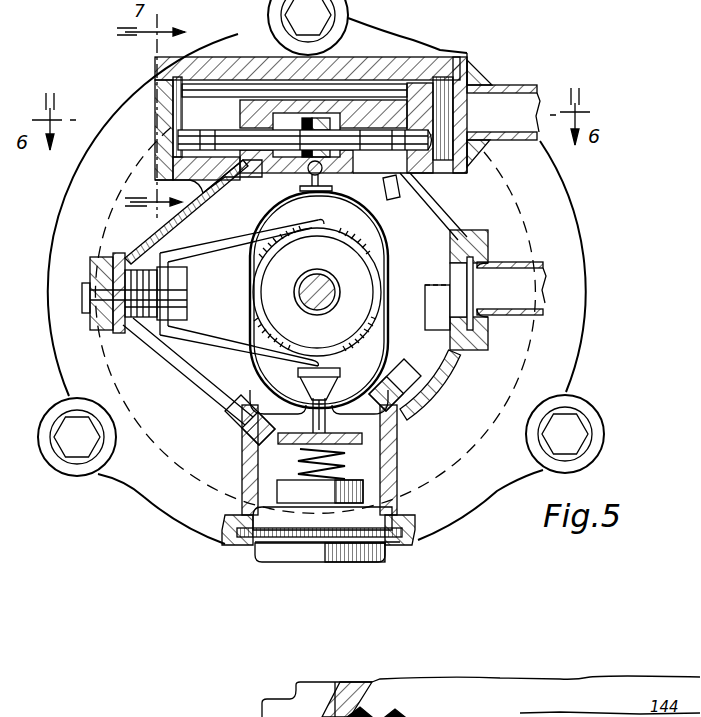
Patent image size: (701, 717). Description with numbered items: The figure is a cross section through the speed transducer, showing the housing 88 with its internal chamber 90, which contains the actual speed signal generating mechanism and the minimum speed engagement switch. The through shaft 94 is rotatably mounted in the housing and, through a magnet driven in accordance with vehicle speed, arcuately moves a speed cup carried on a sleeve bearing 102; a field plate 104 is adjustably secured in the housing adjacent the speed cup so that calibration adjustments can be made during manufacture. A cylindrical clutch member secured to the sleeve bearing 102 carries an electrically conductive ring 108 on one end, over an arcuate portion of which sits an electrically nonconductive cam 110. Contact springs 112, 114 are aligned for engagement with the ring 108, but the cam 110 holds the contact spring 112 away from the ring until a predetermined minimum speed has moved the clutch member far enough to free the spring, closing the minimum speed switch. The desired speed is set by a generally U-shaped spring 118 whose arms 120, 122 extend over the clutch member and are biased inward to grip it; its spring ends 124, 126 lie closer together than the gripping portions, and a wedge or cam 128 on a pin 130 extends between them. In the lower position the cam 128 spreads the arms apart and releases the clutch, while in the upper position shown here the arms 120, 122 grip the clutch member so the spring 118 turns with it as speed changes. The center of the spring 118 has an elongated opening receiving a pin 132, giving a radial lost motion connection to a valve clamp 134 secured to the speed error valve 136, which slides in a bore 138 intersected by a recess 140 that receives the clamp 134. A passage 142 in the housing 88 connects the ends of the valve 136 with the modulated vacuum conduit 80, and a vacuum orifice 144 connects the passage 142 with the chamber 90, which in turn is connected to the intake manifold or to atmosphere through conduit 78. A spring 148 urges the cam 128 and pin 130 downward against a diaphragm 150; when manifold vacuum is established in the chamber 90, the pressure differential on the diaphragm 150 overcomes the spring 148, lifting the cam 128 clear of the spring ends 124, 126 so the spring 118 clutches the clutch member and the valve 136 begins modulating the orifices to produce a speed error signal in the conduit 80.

The conduit 78 is at (507, 256).
The modulated vacuum conduit 80 is at (505, 86).
The housing 88 is at (560, 226).
The chamber 90 is at (190, 356).
The through shaft 94 is at (330, 286).
The sleeve bearing 102 is at (290, 283).
The field plate 104 is at (450, 372).
The electrically conductive ring 108 is at (242, 272).
The electrically nonconductive cam 110 is at (340, 230).
The contact spring 112 is at (262, 252).
The contact spring 114 is at (198, 353).
The U-shaped spring 118 is at (258, 208).
The arm 120 is at (246, 322).
The arm 122 is at (385, 276).
The clutch spring end 124 is at (258, 441).
The clutch spring end 126 is at (406, 400).
The wedge or cam 128 is at (300, 383).
The pin 130 is at (322, 432).
The pin 132 is at (306, 172).
The valve clamp 134 is at (283, 127).
The speed error valve 136 is at (436, 170).
The bore 138 is at (382, 144).
The recess 140 is at (337, 113).
The passage 142 is at (378, 88).
The vacuum orifice 144 is at (447, 130).
The spring 148 is at (350, 463).
The diaphragm 150 is at (388, 506).